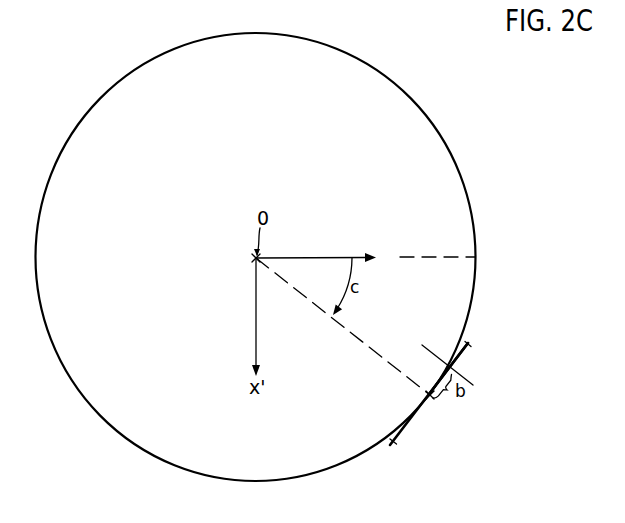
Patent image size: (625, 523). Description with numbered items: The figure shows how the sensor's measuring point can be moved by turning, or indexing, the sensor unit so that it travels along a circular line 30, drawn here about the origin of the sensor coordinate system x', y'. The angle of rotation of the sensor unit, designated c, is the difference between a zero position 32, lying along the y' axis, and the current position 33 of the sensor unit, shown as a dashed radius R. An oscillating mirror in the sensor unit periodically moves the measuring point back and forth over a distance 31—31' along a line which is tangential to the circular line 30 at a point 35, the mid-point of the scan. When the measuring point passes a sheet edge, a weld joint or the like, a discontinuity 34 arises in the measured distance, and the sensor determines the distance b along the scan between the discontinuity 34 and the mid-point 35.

The circular line 30 is at (420, 107).
The scan distance end 31 is at (422, 421).
The scan distance end 31' is at (480, 358).
The zero position 32 is at (332, 257).
The current position 33 is at (380, 352).
The discontinuity 34 is at (473, 384).
The mid-point of the scan 35 is at (432, 397).